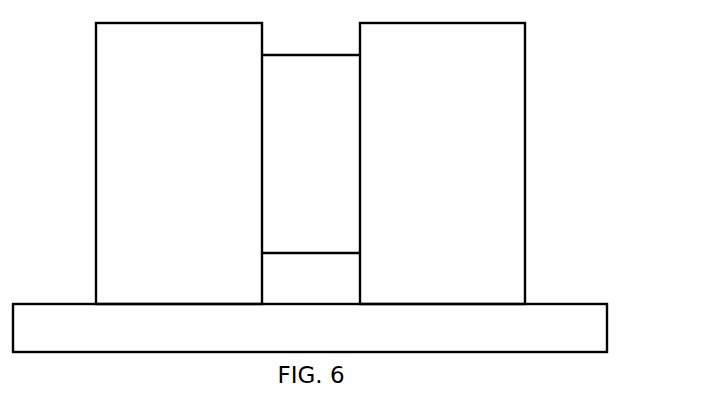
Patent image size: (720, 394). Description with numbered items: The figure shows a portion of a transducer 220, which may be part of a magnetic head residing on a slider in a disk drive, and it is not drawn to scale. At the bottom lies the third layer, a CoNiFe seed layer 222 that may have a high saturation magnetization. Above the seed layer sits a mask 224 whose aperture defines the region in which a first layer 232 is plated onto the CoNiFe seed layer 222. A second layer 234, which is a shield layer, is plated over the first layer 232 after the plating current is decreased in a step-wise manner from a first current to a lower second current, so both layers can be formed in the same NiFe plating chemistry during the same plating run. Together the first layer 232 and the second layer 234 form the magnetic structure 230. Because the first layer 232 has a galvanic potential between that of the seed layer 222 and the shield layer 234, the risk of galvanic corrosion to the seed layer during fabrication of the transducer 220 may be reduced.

The transducer 220 is at (68, 34).
The CoNiFe seed layer 222 is at (608, 337).
The mask 224 is at (95, 279).
The magnetic structure 230 is at (655, 170).
The first layer 232 is at (360, 283).
The second layer 234 is at (272, 54).